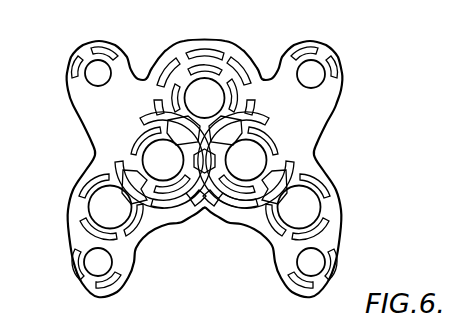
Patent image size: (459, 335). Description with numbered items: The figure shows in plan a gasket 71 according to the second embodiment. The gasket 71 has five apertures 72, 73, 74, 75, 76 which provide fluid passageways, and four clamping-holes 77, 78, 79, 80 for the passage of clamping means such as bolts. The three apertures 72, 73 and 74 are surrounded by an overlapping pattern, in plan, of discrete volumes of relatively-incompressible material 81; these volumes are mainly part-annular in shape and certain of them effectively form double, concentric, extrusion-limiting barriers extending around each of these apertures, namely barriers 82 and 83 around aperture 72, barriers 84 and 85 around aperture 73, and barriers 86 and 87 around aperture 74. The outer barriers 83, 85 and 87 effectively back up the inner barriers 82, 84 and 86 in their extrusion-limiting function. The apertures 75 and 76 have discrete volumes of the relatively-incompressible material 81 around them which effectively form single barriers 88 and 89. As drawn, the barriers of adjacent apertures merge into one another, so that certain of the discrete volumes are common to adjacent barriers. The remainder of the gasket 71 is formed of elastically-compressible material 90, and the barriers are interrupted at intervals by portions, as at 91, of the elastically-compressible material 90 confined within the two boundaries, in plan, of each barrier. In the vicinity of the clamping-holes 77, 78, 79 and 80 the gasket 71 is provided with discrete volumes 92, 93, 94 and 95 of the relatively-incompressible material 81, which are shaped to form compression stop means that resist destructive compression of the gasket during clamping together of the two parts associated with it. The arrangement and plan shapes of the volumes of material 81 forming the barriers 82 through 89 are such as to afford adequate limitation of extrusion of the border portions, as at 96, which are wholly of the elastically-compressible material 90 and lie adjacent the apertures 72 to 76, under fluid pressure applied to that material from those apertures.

The gasket 71 is at (346, 62).
The aperture 72 is at (208, 85).
The aperture 73 is at (155, 153).
The aperture 74 is at (256, 155).
The aperture 75 is at (118, 218).
The aperture 76 is at (290, 216).
The clamping-hole 77 is at (103, 76).
The clamping-hole 78 is at (312, 88).
The clamping-hole 79 is at (88, 261).
The clamping-hole 80 is at (319, 265).
The relatively-incompressible material 81 is at (252, 62).
The extrusion-limiting barrier 82 is at (169, 77).
The extrusion-limiting barrier 83 is at (192, 47).
The extrusion-limiting barrier 84 is at (172, 193).
The extrusion-limiting barrier 85 is at (204, 212).
The extrusion-limiting barrier 86 is at (272, 126).
The extrusion-limiting barrier 87 is at (280, 133).
The single barrier 88 is at (78, 215).
The single barrier 89 is at (340, 223).
The elastically-compressible material 90 is at (92, 97).
The portion of elastically-compressible material 91 is at (332, 205).
The discrete volume (compression stop) 92 is at (83, 58).
The discrete volume (compression stop) 93 is at (329, 62).
The discrete volume (compression stop) 94 is at (120, 285).
The discrete volume (compression stop) 95 is at (304, 288).
The border portion 96 is at (180, 97).